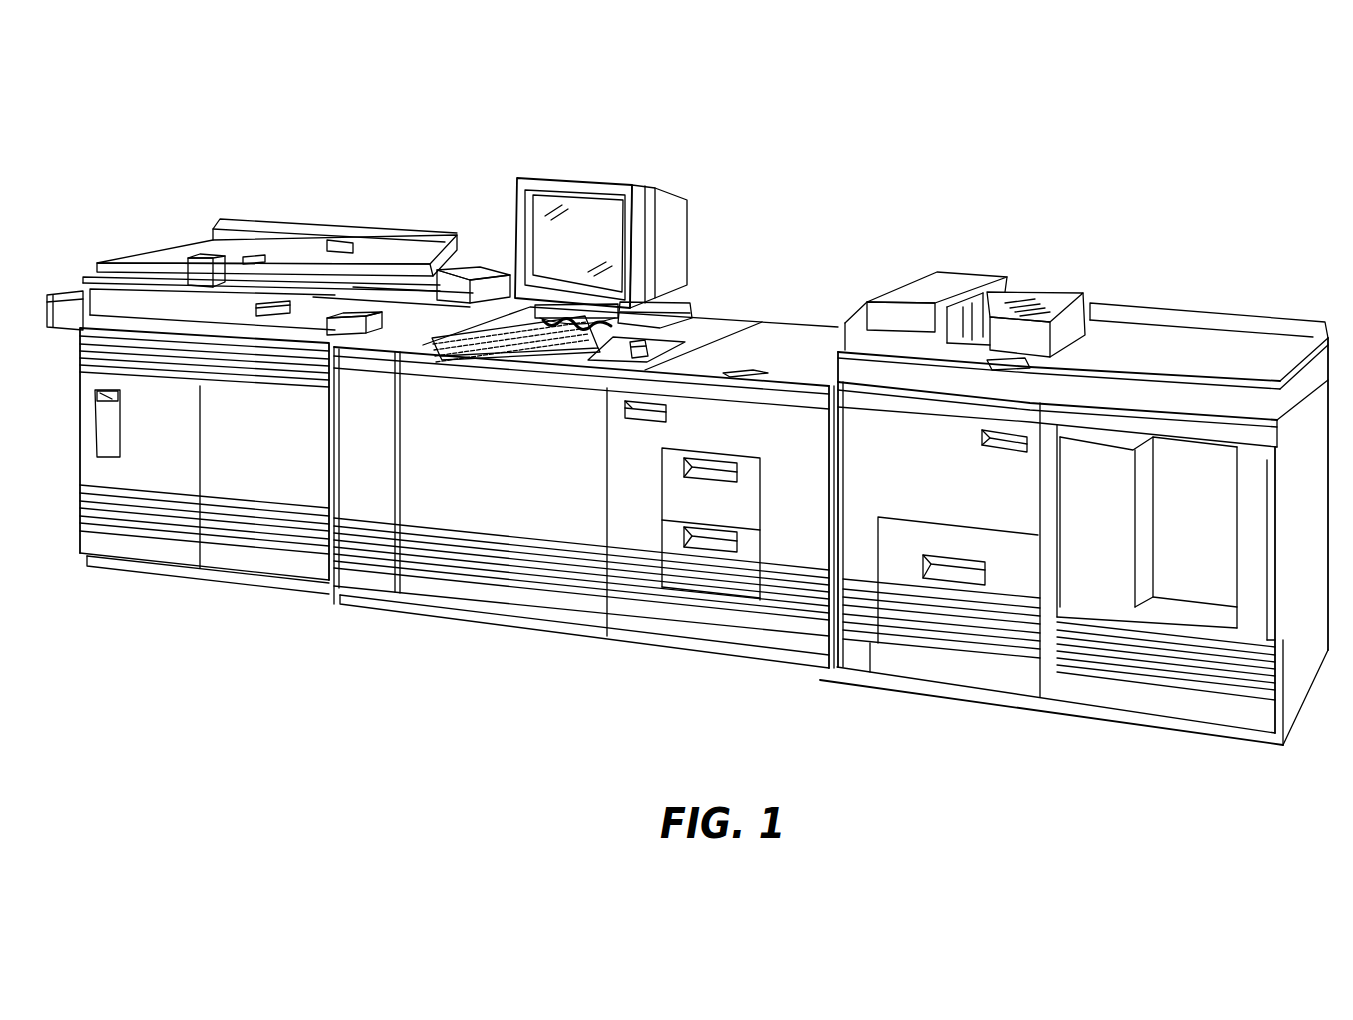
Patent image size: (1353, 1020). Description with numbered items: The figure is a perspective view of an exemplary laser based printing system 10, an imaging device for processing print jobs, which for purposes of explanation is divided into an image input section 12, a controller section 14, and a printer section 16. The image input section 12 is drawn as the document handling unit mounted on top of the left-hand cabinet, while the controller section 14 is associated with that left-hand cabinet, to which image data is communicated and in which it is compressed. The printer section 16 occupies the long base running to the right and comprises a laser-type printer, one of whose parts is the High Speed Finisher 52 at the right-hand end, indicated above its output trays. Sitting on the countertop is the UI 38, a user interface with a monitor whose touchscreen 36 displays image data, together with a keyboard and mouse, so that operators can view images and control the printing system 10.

The printing system 10 is at (773, 72).
The image input section 12 is at (320, 186).
The controller section 14 is at (72, 465).
The printer section 16 is at (1257, 755).
The touchscreen 36 is at (543, 248).
The UI 38 is at (607, 150).
The High Speed Finisher 52 is at (1138, 261).